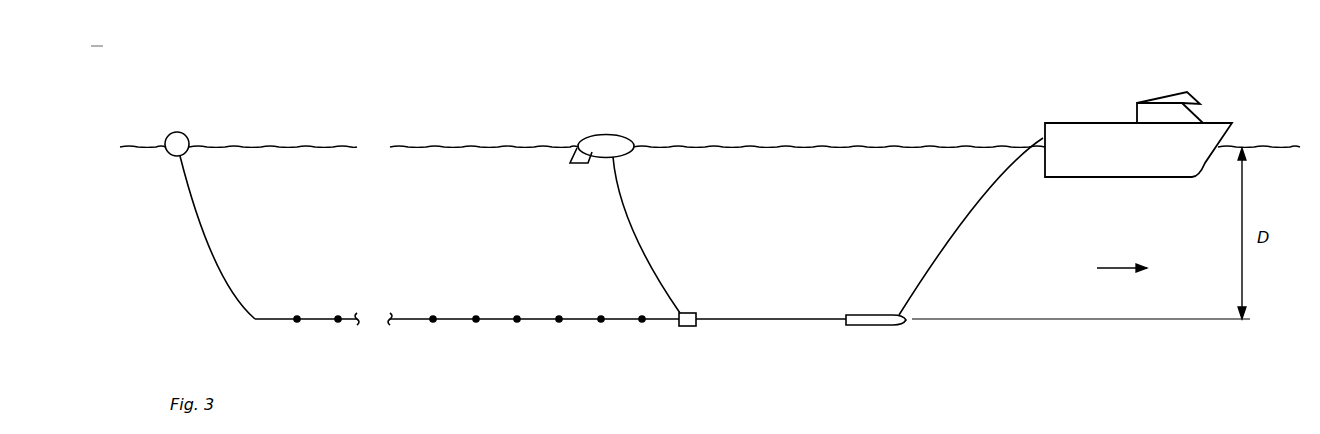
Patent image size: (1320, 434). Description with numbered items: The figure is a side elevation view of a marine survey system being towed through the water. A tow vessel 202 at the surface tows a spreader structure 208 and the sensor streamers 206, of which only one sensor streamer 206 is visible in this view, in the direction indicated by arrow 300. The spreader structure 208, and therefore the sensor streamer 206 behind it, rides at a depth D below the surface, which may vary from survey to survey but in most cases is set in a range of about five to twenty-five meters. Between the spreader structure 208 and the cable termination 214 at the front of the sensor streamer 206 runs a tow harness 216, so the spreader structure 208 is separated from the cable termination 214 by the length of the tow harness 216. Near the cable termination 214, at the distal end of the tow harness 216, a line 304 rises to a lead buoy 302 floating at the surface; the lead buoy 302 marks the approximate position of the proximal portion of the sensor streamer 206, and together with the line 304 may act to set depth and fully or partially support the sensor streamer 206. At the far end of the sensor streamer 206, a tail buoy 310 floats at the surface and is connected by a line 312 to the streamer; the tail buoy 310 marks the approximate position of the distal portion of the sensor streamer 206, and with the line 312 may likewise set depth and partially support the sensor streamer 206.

The tow vessel 202 is at (1097, 123).
The sensor streamer 206 is at (542, 318).
The spreader structure 208 is at (865, 313).
The cable termination 214 is at (687, 327).
The tow harness 216 is at (772, 318).
The arrow 300 is at (1117, 265).
The lead buoy 302 is at (611, 133).
The line 304 is at (633, 232).
The tail buoy 310 is at (180, 130).
The line 312 is at (200, 230).